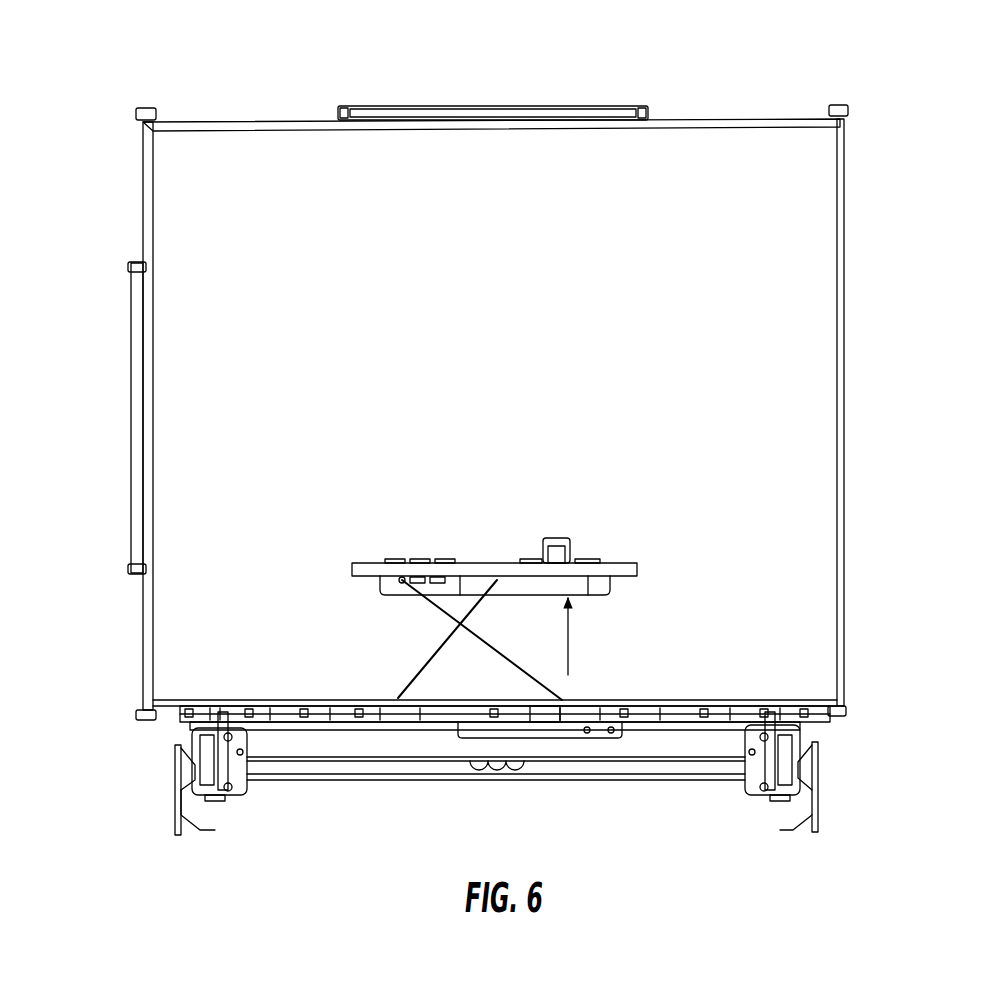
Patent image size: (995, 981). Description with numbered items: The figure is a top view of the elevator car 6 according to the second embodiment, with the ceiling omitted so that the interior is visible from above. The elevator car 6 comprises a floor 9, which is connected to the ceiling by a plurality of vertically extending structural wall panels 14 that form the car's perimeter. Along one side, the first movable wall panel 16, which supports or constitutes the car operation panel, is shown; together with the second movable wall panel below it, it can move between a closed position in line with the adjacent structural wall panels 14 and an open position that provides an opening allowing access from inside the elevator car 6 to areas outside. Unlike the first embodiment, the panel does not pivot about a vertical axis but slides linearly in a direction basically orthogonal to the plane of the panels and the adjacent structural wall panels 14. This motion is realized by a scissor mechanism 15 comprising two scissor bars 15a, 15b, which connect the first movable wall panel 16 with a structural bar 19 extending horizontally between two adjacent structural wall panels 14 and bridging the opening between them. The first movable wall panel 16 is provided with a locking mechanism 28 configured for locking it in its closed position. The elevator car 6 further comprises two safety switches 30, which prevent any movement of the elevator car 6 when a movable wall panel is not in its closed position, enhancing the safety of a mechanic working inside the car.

The elevator car 6 is at (820, 64).
The floor 9 is at (762, 291).
The structural wall panels 14 is at (266, 110).
The scissor mechanism 15 is at (451, 638).
The scissor bar 15a is at (500, 645).
The scissor bar 15b is at (425, 676).
The first movable wall panel 16 is at (512, 575).
The structural bar 19 is at (605, 702).
The locking mechanism 28 is at (634, 579).
The safety switches 30 is at (540, 738).